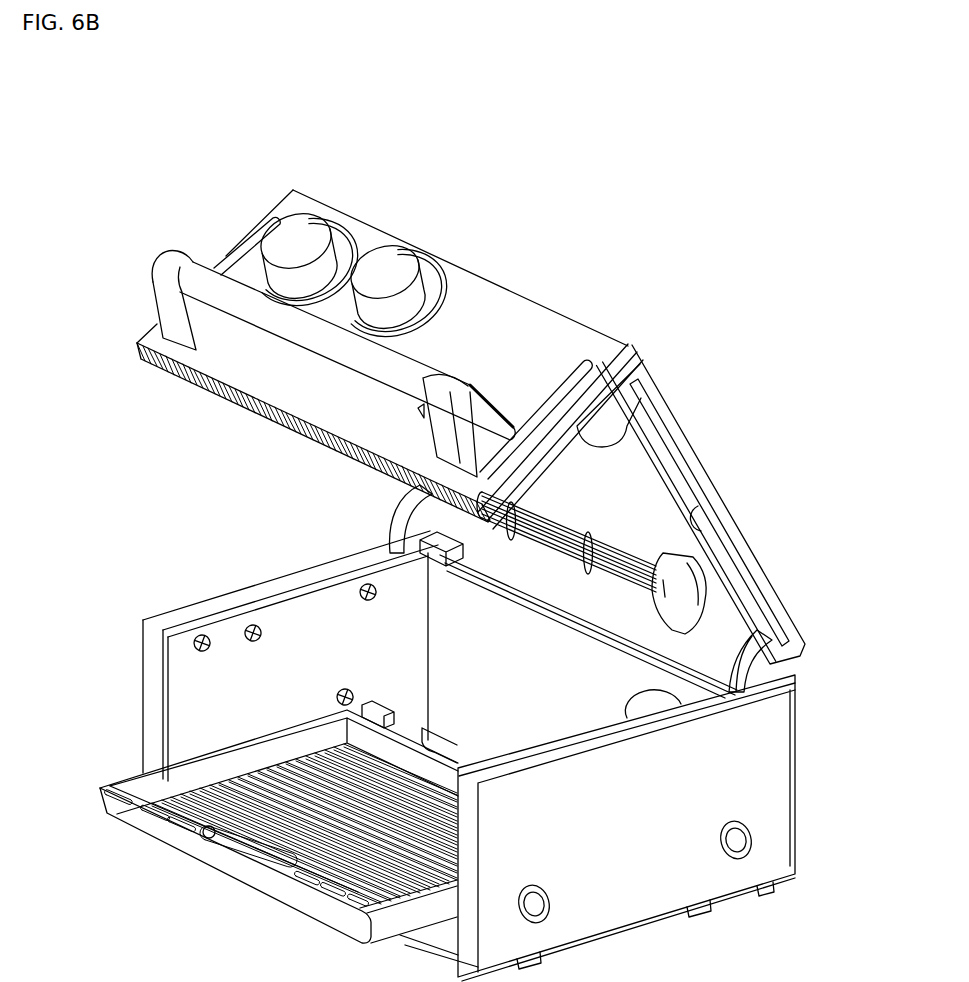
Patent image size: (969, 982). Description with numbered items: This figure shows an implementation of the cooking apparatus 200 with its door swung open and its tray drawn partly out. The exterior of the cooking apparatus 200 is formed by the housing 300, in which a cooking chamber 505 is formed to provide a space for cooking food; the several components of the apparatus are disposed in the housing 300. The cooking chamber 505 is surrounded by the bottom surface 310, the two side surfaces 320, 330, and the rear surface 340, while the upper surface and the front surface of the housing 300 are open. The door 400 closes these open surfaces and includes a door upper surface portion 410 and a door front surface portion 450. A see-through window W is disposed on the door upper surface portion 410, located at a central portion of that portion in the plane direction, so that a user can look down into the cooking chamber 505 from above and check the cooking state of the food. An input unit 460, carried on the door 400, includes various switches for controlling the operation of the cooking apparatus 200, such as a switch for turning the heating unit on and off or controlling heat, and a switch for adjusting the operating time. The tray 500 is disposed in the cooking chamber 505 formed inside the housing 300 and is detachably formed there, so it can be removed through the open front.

The cooking apparatus 200 is at (116, 155).
The housing 300 is at (797, 797).
The bottom surface 310 is at (427, 740).
The side surface 320 is at (190, 686).
The side surface 330 is at (645, 695).
The rear surface 340 is at (613, 673).
The door 400 is at (465, 257).
The door upper surface portion 410 is at (678, 433).
The door front surface portion 450 is at (543, 320).
The input unit 460 is at (390, 270).
The tray 500 is at (176, 855).
The cooking chamber 505 is at (583, 707).
The see-through window W is at (602, 498).